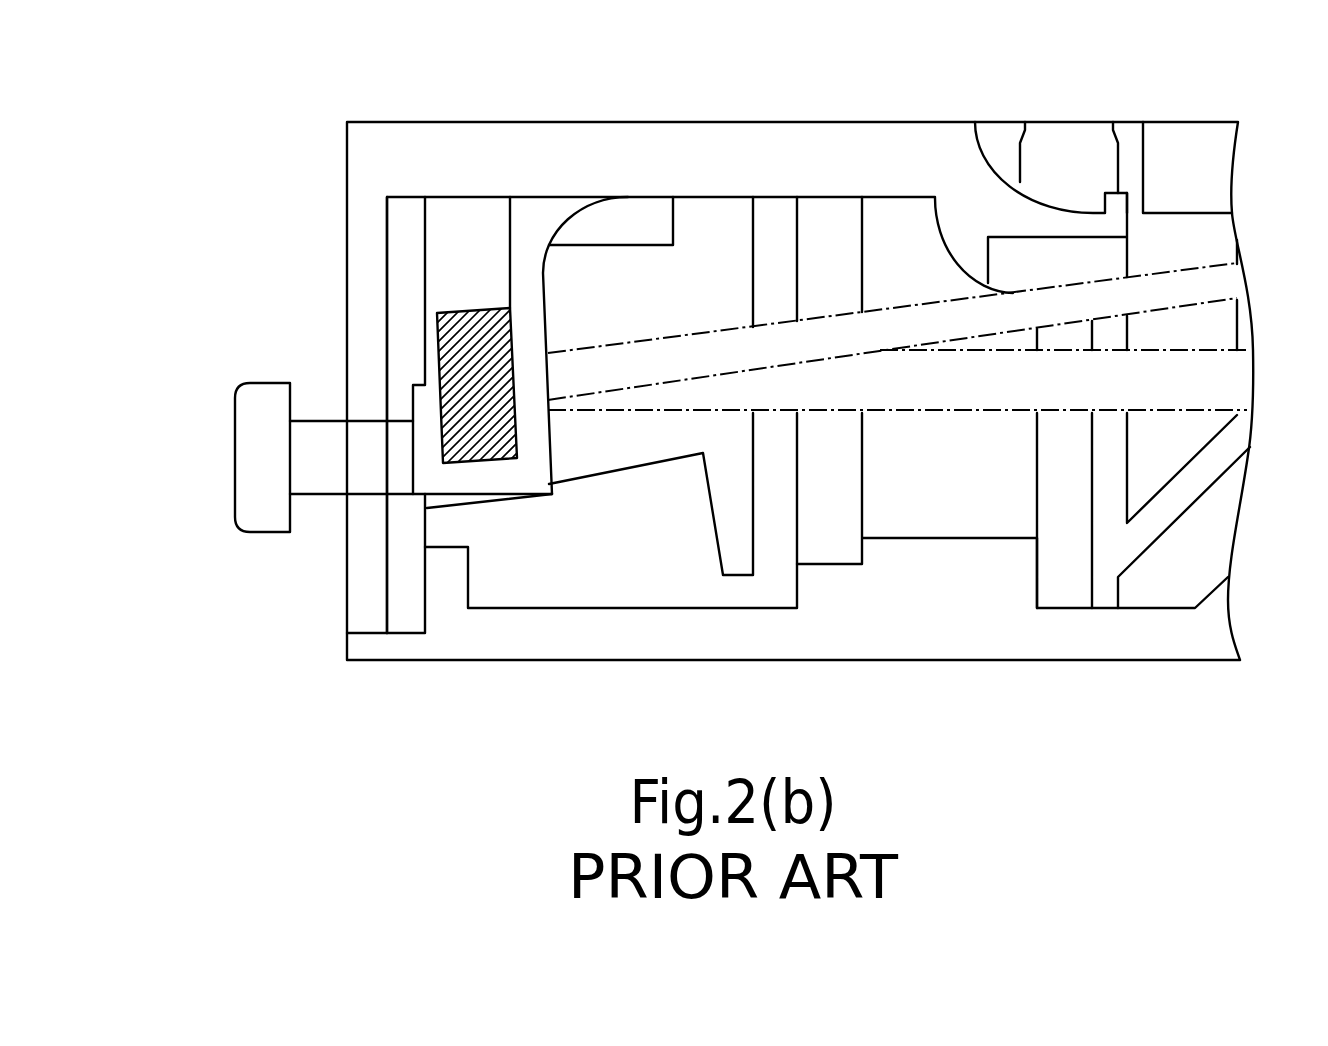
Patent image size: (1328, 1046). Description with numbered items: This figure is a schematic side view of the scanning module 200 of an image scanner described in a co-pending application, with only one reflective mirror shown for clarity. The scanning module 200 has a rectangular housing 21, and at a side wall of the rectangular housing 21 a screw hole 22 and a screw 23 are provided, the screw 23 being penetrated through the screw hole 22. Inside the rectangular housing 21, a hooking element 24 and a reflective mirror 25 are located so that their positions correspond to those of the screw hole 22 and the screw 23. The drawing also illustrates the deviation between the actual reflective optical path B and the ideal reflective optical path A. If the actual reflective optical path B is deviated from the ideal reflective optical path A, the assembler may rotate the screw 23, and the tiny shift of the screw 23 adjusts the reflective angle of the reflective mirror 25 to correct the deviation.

The scanning module 200 is at (604, 80).
The rectangular housing 21 is at (830, 145).
The screw hole 22 is at (370, 437).
The screw 23 is at (250, 470).
The hooking element 24 is at (487, 483).
The reflective mirror 25 is at (462, 440).
The ideal reflective optical path A is at (1233, 383).
The actual reflective optical path B is at (1200, 282).